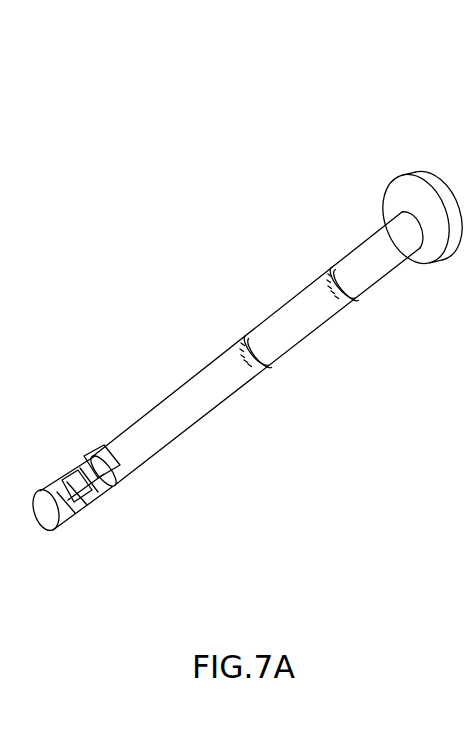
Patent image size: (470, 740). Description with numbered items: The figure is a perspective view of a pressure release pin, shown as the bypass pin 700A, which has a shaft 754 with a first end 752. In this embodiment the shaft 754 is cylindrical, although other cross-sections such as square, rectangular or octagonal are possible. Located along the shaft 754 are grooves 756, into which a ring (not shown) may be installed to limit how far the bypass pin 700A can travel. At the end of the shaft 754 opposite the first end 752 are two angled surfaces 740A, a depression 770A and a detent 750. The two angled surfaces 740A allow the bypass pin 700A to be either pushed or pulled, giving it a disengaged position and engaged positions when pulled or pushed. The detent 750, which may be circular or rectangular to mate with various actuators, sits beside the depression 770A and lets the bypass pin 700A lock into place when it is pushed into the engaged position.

The bypass pin 700A is at (135, 92).
The first end 752 is at (405, 183).
The shaft 754 is at (308, 313).
The grooves 756 is at (245, 335).
The detent 750 is at (106, 466).
The angled surfaces 740A is at (92, 470).
The depression 770A is at (70, 500).